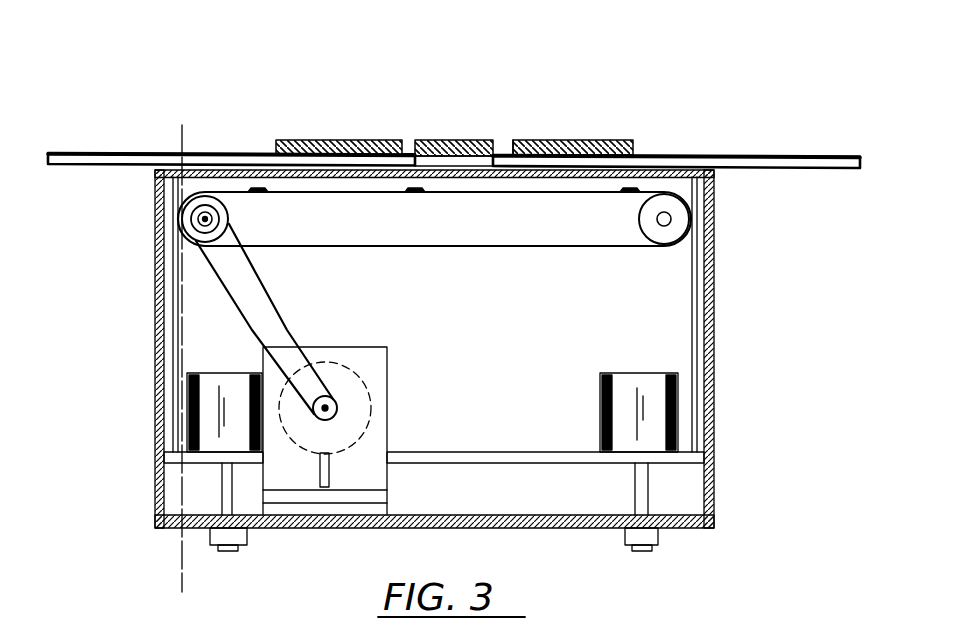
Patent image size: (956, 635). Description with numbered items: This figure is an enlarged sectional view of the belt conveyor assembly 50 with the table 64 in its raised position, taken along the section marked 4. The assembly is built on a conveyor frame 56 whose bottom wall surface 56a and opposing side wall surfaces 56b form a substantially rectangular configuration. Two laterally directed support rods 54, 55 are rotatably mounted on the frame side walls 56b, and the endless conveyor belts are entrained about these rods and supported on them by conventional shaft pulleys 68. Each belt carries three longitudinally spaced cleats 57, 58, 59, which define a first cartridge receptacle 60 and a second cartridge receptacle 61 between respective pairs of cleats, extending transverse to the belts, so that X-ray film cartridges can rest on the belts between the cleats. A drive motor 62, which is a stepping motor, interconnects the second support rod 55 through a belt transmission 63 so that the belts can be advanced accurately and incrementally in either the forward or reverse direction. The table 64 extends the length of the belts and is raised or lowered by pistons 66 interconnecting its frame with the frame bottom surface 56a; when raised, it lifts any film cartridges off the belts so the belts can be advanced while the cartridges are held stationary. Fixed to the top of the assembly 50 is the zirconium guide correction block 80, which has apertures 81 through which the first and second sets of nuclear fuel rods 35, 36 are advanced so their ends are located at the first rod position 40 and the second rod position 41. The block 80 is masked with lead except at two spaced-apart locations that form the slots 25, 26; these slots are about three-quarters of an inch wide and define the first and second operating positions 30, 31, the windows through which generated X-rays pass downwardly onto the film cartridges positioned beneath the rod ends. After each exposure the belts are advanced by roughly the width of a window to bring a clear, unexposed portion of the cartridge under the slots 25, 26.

The section line 4- 4 is at (182, 125).
The slot 25 is at (512, 150).
The slot 26 is at (400, 140).
The first operating position 30 is at (523, 131).
The second operating position 31 is at (409, 136).
The first set of nuclear fuel rods 35 is at (763, 155).
The second set of nuclear fuel rods 36 is at (83, 153).
The first rod position 40 is at (547, 178).
The second rod position 41 is at (373, 195).
The belt conveyor assembly 50 is at (717, 530).
The support rod 54 is at (673, 223).
The second support rod 55 is at (185, 212).
The belt conveyor assembly frame 56 is at (153, 343).
The bottom wall surface 56a is at (360, 528).
The side wall surface 56b is at (717, 366).
The cleat 57 is at (620, 195).
The cleat 58 is at (441, 195).
The cleat 59 is at (283, 193).
The first cartridge receptacle 60 is at (480, 192).
The second cartridge receptacle 61 is at (330, 195).
The drive motor 62 is at (371, 405).
The belt transmission 63 is at (287, 312).
The table 64 is at (179, 281).
The piston 66 is at (240, 372).
The shaft pulley 68 is at (232, 206).
The guide correction block 80 is at (580, 140).
The aperture 81 is at (440, 140).